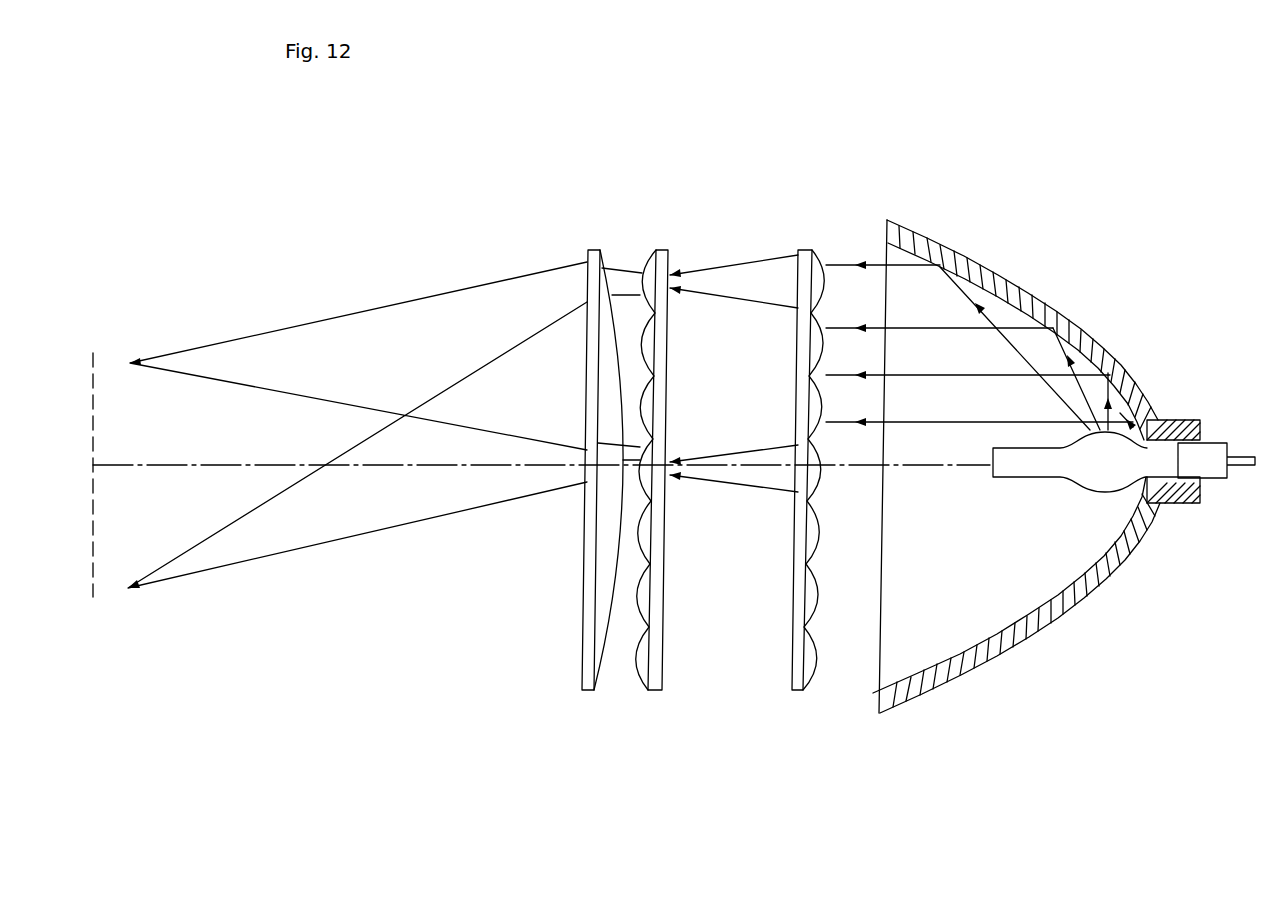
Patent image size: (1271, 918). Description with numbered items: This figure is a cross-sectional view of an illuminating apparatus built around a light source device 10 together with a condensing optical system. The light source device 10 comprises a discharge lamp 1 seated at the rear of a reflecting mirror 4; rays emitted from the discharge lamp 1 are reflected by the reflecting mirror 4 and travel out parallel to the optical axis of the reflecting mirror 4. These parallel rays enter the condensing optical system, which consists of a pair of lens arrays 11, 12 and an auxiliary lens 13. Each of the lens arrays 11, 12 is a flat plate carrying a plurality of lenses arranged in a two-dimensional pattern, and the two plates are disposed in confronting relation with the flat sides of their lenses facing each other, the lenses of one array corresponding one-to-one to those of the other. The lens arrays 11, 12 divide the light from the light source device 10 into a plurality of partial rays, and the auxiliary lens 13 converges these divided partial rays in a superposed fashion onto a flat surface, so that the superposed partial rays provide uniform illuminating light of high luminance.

The discharge lamp 1 is at (1225, 478).
The reflecting mirror 4 is at (1000, 274).
The light source device 10 is at (1150, 357).
The lens array 11 is at (808, 250).
The lens array 12 is at (657, 250).
The auxiliary lens 13 is at (592, 250).